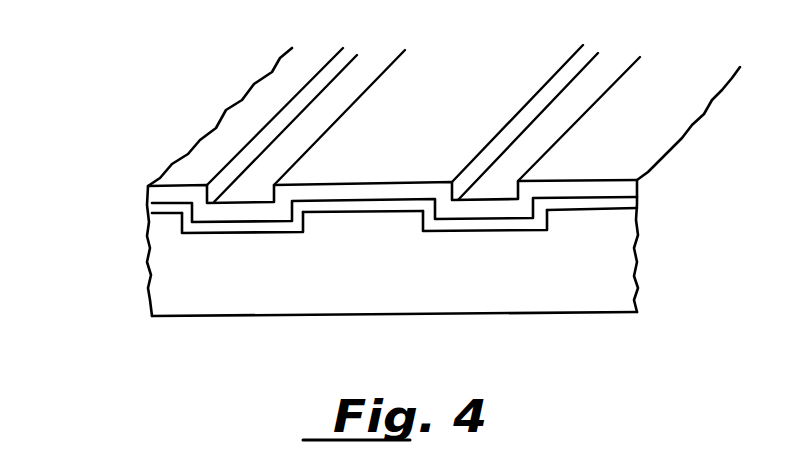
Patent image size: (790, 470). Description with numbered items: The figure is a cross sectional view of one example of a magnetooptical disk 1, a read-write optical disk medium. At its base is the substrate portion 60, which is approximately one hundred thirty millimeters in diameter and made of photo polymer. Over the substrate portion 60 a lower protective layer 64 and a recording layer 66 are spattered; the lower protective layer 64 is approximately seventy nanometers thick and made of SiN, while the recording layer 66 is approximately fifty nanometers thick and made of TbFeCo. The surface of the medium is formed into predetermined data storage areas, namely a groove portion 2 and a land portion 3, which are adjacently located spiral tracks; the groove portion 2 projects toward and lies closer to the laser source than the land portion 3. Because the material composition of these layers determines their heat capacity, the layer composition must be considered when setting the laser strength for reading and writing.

The magnetooptical disk 1 is at (126, 277).
The groove portion 2 is at (253, 240).
The land portion 3 is at (375, 222).
The substrate portion 60 is at (632, 262).
The lower protective layer 64 is at (625, 201).
The recording layer 66 is at (623, 190).